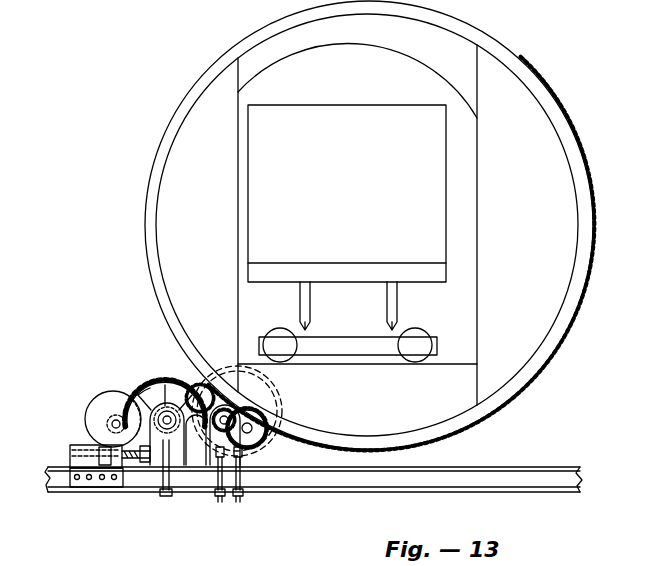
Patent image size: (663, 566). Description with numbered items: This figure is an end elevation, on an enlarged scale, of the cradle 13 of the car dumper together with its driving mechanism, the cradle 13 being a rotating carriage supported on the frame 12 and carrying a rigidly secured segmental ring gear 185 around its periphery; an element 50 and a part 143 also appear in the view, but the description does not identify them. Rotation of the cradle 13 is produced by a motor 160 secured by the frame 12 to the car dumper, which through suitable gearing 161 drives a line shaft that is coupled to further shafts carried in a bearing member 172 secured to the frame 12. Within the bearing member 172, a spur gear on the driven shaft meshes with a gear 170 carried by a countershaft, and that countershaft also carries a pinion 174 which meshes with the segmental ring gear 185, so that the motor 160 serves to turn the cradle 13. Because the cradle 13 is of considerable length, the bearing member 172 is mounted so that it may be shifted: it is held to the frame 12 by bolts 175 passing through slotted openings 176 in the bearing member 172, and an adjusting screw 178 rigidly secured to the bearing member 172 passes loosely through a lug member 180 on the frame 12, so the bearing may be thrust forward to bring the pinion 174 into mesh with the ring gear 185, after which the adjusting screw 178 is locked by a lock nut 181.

The frame 12 is at (372, 468).
The cradle 13 is at (577, 177).
The load carriage 50 is at (347, 233).
The fastening bolt ends 143 is at (170, 496).
The motor 160 is at (101, 398).
The gearing 161 is at (146, 385).
The gear 170 is at (260, 457).
The bearing member 172 is at (173, 378).
The pinion 174 is at (250, 440).
The bolts 175 is at (242, 494).
The slotted openings 176 is at (147, 473).
The adjusting screw 178 is at (130, 467).
The lug member 180 is at (75, 463).
The lock nut 181 is at (96, 450).
The segmental ring gear 185 is at (500, 410).